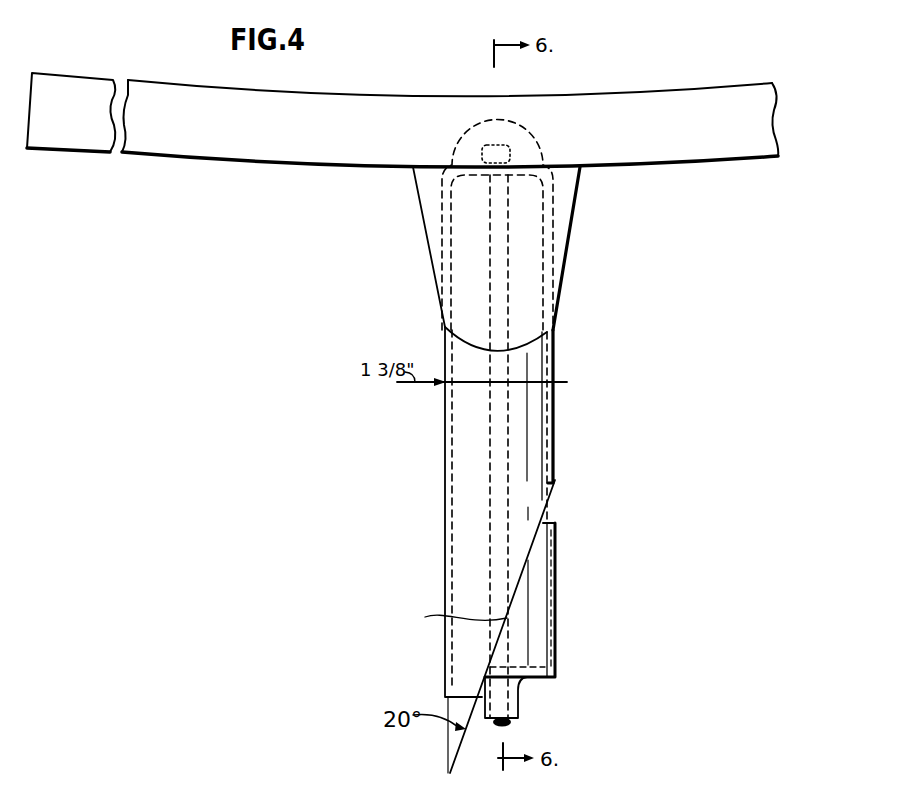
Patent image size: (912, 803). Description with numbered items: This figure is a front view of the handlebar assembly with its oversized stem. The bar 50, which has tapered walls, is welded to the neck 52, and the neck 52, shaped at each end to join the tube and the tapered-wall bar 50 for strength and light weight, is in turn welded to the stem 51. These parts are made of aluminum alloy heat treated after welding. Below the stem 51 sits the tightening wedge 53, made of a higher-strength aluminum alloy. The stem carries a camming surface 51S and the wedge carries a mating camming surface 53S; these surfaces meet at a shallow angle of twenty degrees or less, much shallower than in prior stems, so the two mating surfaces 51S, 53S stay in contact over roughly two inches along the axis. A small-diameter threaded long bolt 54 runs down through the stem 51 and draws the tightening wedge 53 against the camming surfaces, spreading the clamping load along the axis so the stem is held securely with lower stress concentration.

The bar 50 is at (240, 152).
The stem 51 is at (445, 445).
The camming surface 51S is at (545, 503).
The neck 52 is at (432, 227).
The tightening wedge 53 is at (537, 640).
The camming surface 53S is at (456, 606).
The threaded long bolt 54 is at (487, 410).